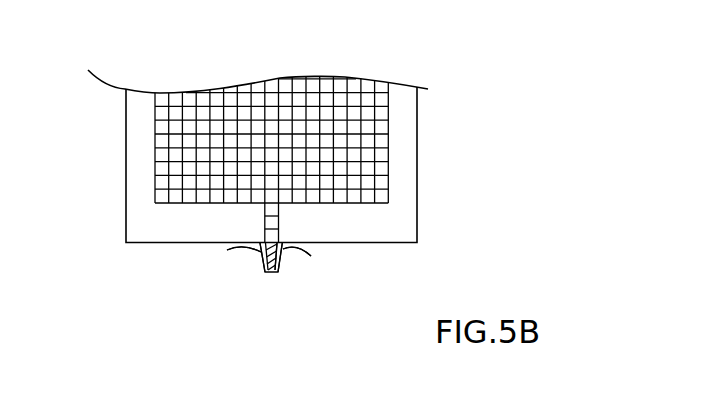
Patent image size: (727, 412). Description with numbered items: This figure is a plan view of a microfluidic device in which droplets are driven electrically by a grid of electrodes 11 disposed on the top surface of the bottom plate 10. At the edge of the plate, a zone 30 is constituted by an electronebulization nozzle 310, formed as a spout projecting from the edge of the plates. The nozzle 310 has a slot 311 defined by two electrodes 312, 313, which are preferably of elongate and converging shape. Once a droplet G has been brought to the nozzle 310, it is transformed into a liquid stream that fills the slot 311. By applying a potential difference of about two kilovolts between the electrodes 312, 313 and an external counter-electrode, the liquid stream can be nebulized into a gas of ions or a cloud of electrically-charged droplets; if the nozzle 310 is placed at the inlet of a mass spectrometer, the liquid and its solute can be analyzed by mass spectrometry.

The bottom plate 10 is at (417, 212).
The grid of electrodes 11 is at (378, 164).
The zone 30 is at (243, 270).
The electronebulization nozzle 310 is at (300, 270).
The slot 311 is at (245, 264).
The electrode 312 is at (262, 273).
The electrode 313 is at (281, 273).
The droplet G is at (293, 262).